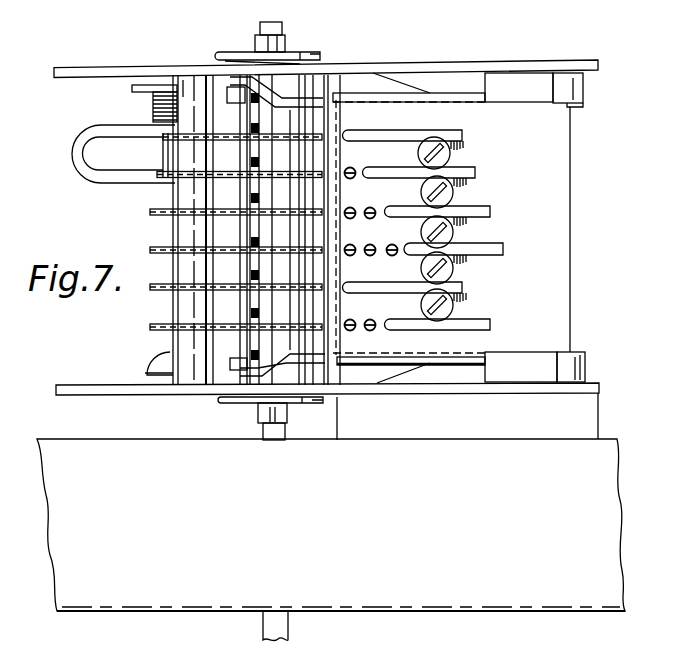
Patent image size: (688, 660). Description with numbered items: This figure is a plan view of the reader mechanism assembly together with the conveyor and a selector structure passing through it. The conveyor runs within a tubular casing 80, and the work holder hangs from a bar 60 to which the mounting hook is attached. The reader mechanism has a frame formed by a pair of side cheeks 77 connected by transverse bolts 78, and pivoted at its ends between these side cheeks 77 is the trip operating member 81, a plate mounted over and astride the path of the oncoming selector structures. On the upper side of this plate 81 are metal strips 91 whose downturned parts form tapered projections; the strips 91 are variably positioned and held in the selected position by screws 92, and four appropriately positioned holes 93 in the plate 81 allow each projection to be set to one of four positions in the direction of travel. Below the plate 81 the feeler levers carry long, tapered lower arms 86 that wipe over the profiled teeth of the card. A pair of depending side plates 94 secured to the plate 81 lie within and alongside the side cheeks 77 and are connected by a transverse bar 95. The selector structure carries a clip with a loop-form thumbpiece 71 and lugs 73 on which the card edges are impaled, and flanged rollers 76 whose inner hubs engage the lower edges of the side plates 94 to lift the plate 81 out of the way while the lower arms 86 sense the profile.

The bar 60 is at (271, 626).
The loop-form thumbpiece 71 is at (98, 176).
The lugs 73 is at (232, 92).
The flanged rollers 76 is at (297, 52).
The side cheeks 77 is at (387, 63).
The transverse bolts 78 is at (183, 92).
The tubular casing 80 is at (331, 525).
The trip operating member 81 is at (552, 238).
The lower arms 86 is at (162, 253).
The metal strips 91 is at (388, 132).
The screws 92 is at (452, 192).
The holes 93 is at (352, 318).
The depending side plates 94 is at (272, 91).
The transverse bar 95 is at (295, 128).